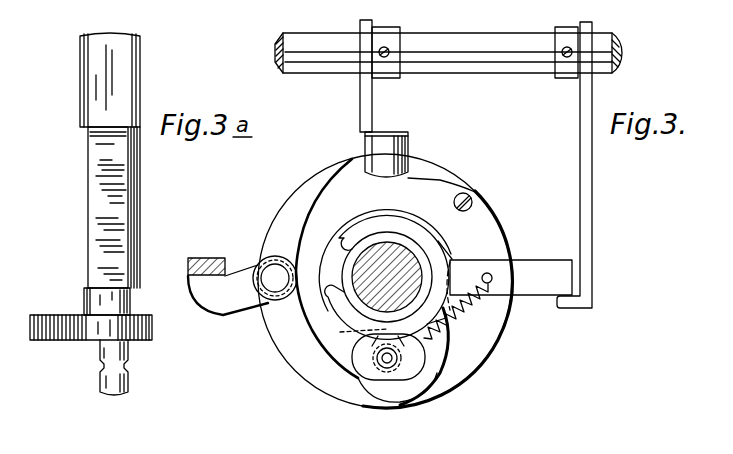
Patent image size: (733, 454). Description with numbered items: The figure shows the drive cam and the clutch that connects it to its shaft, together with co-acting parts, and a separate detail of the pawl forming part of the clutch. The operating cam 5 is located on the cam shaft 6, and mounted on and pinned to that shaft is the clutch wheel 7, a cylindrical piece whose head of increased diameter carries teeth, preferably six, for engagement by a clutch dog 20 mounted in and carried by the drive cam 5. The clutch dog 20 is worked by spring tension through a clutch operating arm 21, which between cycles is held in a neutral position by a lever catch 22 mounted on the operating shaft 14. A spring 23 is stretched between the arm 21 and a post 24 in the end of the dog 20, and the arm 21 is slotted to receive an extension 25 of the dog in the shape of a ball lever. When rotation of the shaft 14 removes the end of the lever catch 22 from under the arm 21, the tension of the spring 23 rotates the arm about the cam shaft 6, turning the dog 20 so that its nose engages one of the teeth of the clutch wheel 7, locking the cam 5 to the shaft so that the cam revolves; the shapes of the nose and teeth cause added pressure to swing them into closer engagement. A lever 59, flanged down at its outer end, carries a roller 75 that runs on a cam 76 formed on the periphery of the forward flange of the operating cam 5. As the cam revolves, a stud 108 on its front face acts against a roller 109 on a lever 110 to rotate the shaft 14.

In FIG. 3, the operating cam 5 is at (488, 358).
In FIG. 3, the cam shaft 6 is at (350, 292).
In FIG. 3, the clutch wheel 7 is at (430, 244).
In FIG. 3, the operating shaft 14 is at (448, 42).
In FIG. 3A, the clutch dog 20 is at (100, 253).
In FIG. 3, the clutch operating arm 21 is at (525, 270).
In FIG. 3, the lever catch 22 is at (592, 274).
In FIG. 3, the spring 23 is at (462, 312).
In FIG. 3A, the post 24 is at (130, 380).
In FIG. 3, the post 24 is at (389, 368).
In FIG. 3A, the extension 25 is at (50, 343).
In FIG. 3, the extension 25 is at (390, 330).
In FIG. 3, the lever 59 is at (245, 305).
In FIG. 3, the roller 75 is at (262, 270).
In FIG. 3, the cam 76 is at (318, 193).
In FIG. 3, the stud 108 is at (471, 196).
In FIG. 3, the roller 109 is at (410, 160).
In FIG. 3, the lever 110 is at (373, 105).